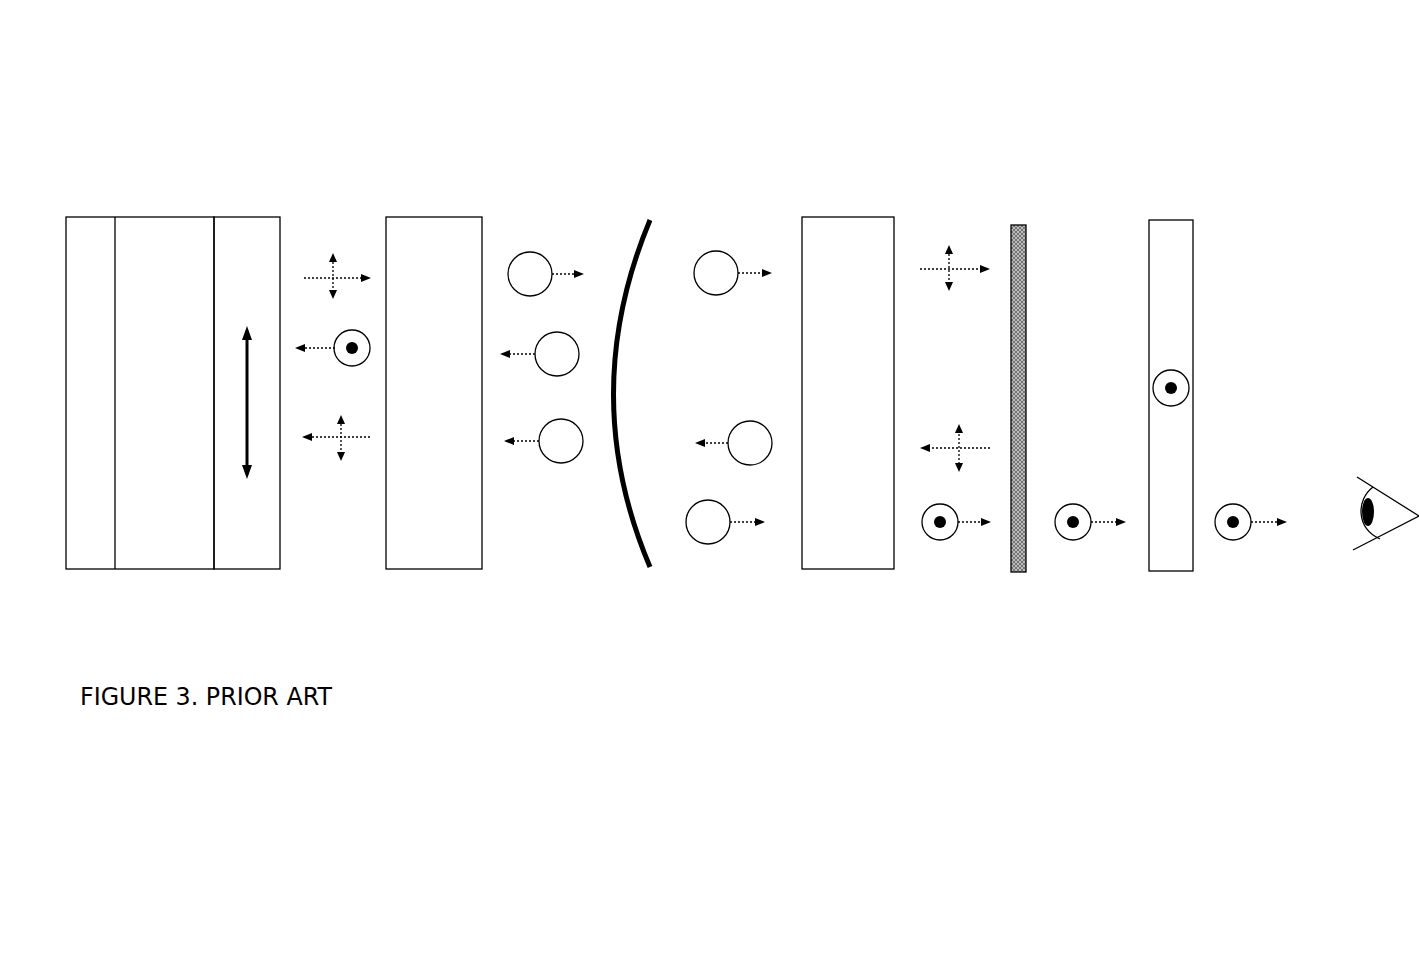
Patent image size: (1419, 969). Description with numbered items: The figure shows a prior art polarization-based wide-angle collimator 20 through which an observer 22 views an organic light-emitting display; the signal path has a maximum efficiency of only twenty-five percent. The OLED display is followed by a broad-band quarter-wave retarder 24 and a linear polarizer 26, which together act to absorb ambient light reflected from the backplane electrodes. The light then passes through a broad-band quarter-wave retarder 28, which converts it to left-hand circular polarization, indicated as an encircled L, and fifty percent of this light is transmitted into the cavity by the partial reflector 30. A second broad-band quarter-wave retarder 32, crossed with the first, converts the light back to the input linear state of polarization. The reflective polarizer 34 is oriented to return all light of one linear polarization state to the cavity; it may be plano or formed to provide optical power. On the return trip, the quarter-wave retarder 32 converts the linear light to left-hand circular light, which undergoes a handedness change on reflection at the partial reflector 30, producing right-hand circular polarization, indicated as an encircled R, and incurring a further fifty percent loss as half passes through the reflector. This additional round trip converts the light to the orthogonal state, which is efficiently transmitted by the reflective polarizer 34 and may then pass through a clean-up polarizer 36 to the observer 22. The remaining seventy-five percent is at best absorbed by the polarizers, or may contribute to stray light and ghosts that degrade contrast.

The wide-angle collimator 20 is at (742, 327).
The observer 22 is at (1388, 465).
The broad-band quarter-wave retarder 24 is at (163, 217).
The linear polarizer 26 is at (252, 217).
The broad-band quarter-wave retarder 28 is at (436, 217).
The partial reflector 30 is at (640, 213).
The broad-band quarter-wave retarder 32 is at (847, 217).
The reflective polarizer 34 is at (1018, 225).
The clean-up polarizer 36 is at (1172, 220).